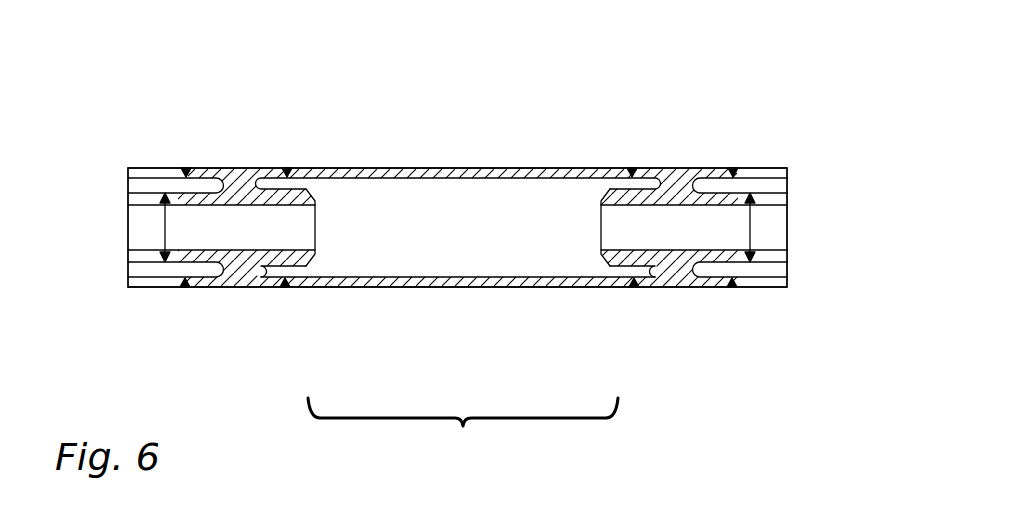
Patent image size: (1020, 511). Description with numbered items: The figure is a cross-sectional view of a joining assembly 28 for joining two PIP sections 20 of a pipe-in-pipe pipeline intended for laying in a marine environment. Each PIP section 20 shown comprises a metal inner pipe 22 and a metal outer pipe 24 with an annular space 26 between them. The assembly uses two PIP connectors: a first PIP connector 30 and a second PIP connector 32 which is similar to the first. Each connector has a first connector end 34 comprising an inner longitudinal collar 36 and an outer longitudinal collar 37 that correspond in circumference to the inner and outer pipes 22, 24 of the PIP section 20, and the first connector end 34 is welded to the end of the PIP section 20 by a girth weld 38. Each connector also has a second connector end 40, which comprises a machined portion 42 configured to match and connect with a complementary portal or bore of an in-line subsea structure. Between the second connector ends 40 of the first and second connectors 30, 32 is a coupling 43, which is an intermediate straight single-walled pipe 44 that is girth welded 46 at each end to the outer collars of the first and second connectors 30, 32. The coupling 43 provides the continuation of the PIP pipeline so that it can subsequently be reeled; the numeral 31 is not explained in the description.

The PIP pipeline section 20 is at (150, 287).
The inner pipe 22 is at (127, 203).
The outer pipe 24 is at (128, 170).
The annular space 26 is at (130, 272).
The joining assembly 28 is at (479, 83).
The first PIP connector 30 is at (237, 297).
The second plug 31 is at (653, 288).
The second PIP connector 32 is at (672, 297).
The first connector end 34 is at (210, 154).
The inner longitudinal collar 36 is at (196, 251).
The outer longitudinal collar 37 is at (194, 166).
The girth weld 38 is at (186, 289).
The second connector end 40 is at (308, 216).
The machined portion 42 is at (305, 244).
The coupling 43 is at (463, 426).
The intermediate single walled pipe 44 is at (460, 288).
The girth weld 46 is at (288, 166).